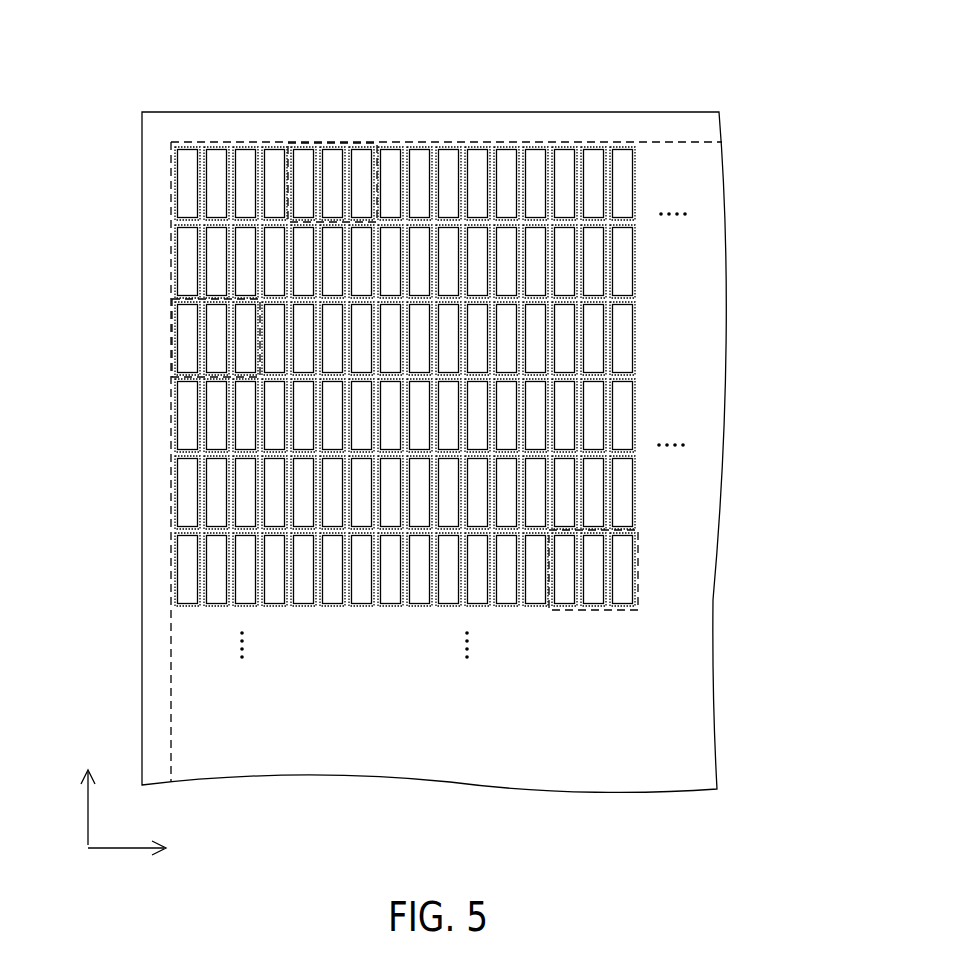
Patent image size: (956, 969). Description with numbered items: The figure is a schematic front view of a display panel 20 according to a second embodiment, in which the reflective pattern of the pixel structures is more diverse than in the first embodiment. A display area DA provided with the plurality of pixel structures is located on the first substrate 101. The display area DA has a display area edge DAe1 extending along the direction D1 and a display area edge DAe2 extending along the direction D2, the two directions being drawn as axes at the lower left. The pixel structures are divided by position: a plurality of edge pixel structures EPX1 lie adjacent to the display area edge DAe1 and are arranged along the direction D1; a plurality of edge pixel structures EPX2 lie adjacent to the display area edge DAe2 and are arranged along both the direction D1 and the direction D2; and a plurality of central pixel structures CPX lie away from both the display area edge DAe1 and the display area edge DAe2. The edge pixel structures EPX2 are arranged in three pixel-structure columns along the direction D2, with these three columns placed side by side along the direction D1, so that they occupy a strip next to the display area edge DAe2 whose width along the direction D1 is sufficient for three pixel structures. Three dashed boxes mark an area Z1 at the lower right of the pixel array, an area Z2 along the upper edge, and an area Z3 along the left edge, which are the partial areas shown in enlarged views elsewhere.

The display panel 20 is at (801, 873).
The display area DA is at (496, 446).
The display area edge DAe1 is at (684, 144).
The display area edge DAe2 is at (172, 738).
The edge pixel structures EPX1 is at (300, 147).
The edge pixel structures EPX2 is at (202, 354).
The central pixel structures CPX is at (635, 410).
The area Z1 is at (593, 612).
The area Z2 is at (365, 143).
The area Z3 is at (167, 365).
The first substrate 101 is at (690, 342).
The direction D1 is at (144, 848).
The direction D2 is at (86, 789).